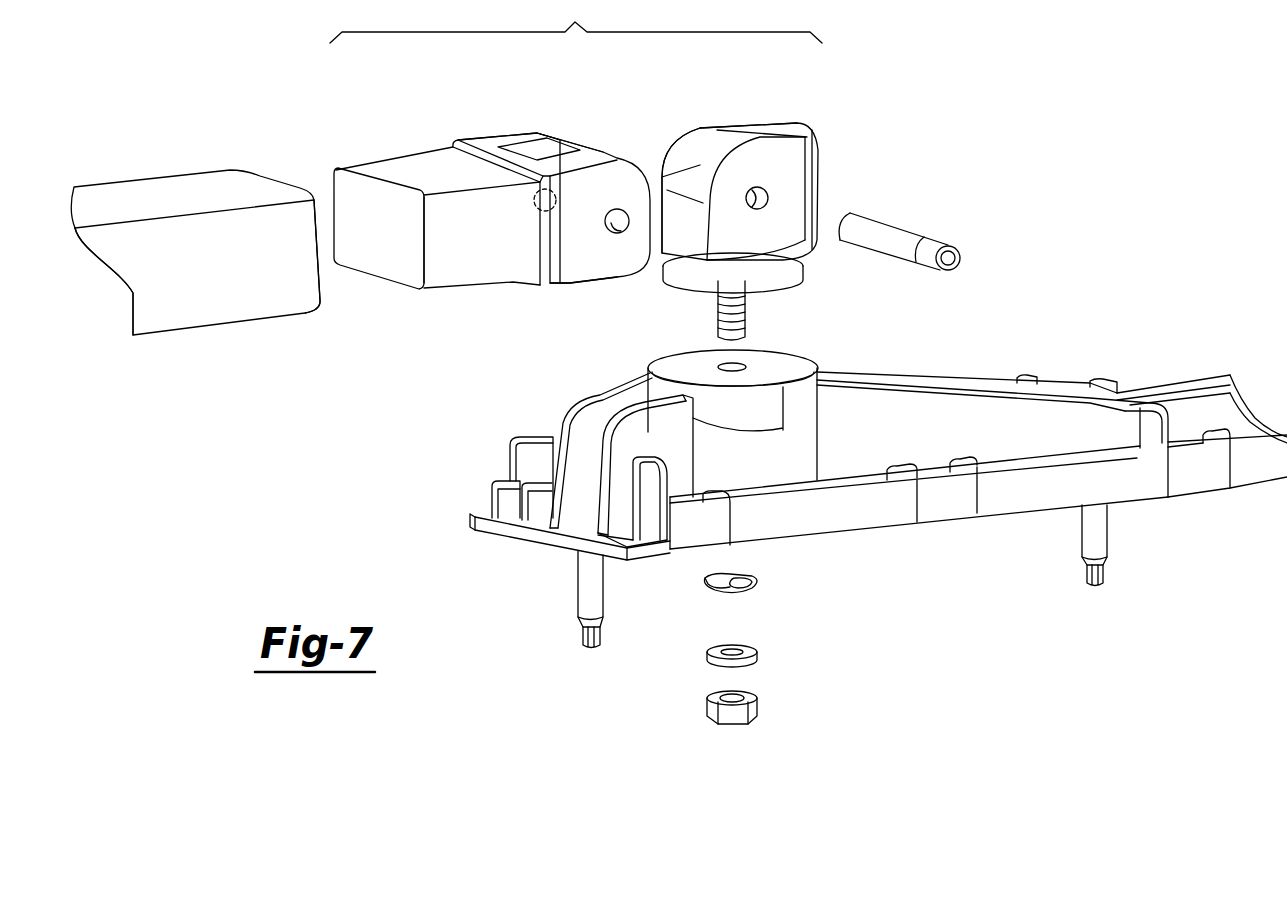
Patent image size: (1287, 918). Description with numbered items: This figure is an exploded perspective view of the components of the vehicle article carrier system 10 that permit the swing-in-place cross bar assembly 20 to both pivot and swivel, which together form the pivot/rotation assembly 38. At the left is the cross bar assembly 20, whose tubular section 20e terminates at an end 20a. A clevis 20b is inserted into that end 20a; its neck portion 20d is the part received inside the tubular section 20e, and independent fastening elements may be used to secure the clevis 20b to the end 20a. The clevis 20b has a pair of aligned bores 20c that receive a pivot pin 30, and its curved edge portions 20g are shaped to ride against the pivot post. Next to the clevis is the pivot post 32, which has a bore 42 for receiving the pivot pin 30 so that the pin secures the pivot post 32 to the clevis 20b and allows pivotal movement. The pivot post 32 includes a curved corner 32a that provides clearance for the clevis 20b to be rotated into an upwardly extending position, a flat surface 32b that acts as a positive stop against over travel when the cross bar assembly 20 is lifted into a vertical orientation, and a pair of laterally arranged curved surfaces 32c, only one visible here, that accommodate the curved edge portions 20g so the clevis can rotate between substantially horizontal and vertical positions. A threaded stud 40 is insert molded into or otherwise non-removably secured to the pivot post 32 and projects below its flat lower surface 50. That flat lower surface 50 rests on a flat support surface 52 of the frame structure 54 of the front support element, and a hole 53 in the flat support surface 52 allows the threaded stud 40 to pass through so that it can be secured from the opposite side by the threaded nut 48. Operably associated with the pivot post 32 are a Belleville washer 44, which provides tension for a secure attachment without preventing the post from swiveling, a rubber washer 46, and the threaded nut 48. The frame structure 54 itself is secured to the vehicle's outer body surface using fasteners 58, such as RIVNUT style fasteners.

The vehicle article carrier system 10 is at (1035, 156).
The swing-in-place cross bar assembly 20 is at (170, 175).
The end of the cross bar assembly 20a is at (291, 292).
The clevis 20b is at (398, 162).
The aligned bores 20c is at (535, 208).
The neck portion 20d is at (450, 268).
The tubular section 20e is at (151, 309).
The curved edge portions 20g is at (612, 158).
The pivot pin 30 is at (962, 258).
The pivot post 32 is at (823, 160).
The curved corner 32a is at (697, 172).
The flat surface 32b is at (766, 130).
The laterally arranged curved surfaces 32c is at (800, 242).
The pivot/rotation assembly 38 is at (576, 21).
The threaded stud 40 is at (738, 324).
The bore 42 is at (768, 198).
The Belleville washer 44 is at (756, 580).
The rubber washer 46 is at (757, 650).
The threaded nut 48 is at (757, 702).
The flat lower surface 50 is at (778, 282).
The flat support surface 52 is at (664, 362).
The hole 53 is at (732, 374).
The frame structure 54 is at (853, 460).
The fasteners 58 is at (596, 606).